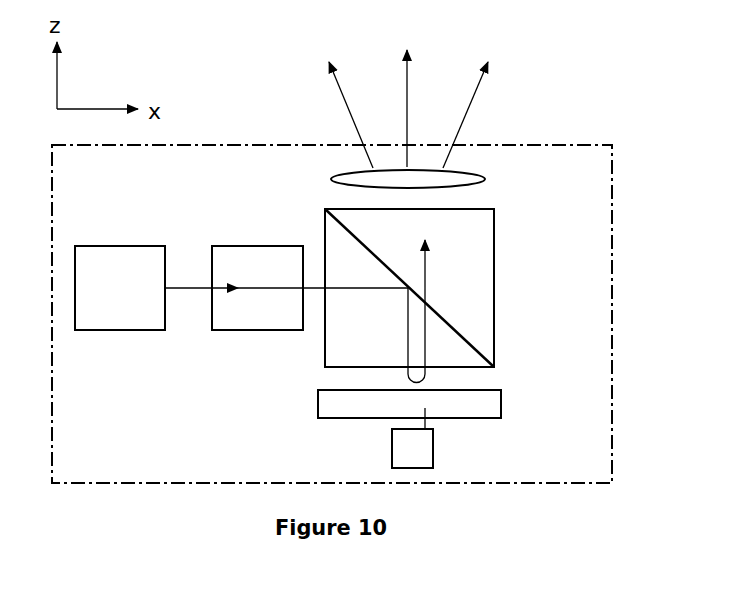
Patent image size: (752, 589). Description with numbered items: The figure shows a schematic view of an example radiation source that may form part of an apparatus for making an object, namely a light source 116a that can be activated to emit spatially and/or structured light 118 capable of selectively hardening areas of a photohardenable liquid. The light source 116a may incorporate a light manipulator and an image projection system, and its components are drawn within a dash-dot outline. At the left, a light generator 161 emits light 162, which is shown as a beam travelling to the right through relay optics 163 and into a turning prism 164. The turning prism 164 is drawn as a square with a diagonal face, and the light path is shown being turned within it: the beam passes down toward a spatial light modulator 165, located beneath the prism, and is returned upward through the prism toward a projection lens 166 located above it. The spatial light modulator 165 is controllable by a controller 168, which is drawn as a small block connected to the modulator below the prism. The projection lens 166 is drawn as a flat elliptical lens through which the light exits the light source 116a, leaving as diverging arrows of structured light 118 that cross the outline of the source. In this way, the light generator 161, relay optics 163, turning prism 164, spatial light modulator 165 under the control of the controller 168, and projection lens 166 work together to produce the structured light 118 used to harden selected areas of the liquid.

The light source 116a is at (249, 122).
The light 118 is at (475, 108).
The light generator 161 is at (125, 330).
The light 162 is at (197, 288).
The relay optics 163 is at (252, 330).
The turning prism 164 is at (496, 245).
The spatial light modulator 165 is at (481, 419).
The projection lens 166 is at (483, 182).
The controller 168 is at (405, 442).